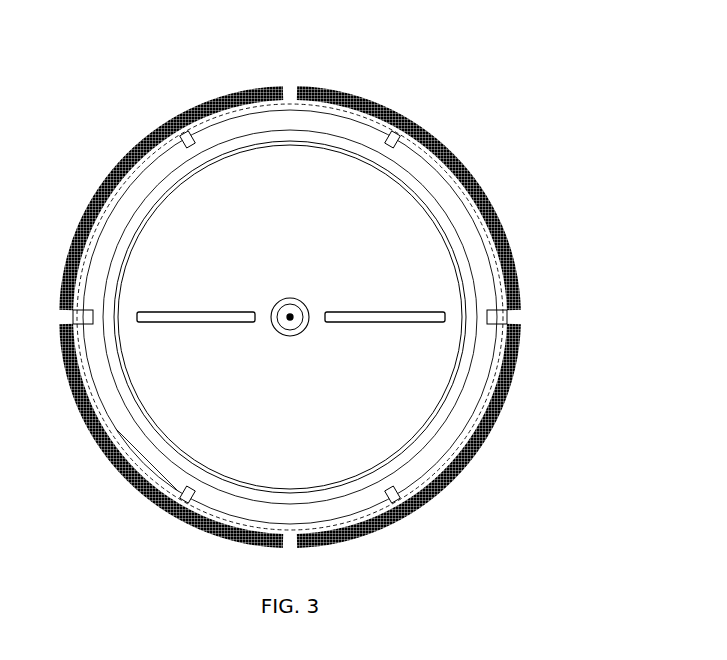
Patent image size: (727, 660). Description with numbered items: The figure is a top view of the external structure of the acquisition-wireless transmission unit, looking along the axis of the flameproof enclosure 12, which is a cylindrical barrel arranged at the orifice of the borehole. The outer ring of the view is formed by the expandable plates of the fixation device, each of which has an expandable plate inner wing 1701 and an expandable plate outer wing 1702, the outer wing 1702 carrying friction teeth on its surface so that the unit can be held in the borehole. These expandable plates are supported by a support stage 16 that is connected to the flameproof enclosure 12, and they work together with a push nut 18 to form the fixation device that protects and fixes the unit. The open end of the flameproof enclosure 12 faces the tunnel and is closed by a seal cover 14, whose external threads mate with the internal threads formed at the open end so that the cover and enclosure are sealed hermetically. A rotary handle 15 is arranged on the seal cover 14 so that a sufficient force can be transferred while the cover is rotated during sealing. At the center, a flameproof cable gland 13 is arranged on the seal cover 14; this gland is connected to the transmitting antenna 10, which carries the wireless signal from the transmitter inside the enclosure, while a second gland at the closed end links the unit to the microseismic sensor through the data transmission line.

The transmitting antenna 10 is at (296, 322).
The flameproof enclosure 12 is at (513, 375).
The flameproof cable gland 13 is at (299, 309).
The seal cover 14 is at (330, 438).
The rotary handle 15 is at (183, 316).
The support stage 16 is at (509, 313).
The push nut 18 is at (437, 208).
The expandable plate inner wing 1701 is at (334, 88).
The expandable plate outer wing 1702 is at (440, 136).